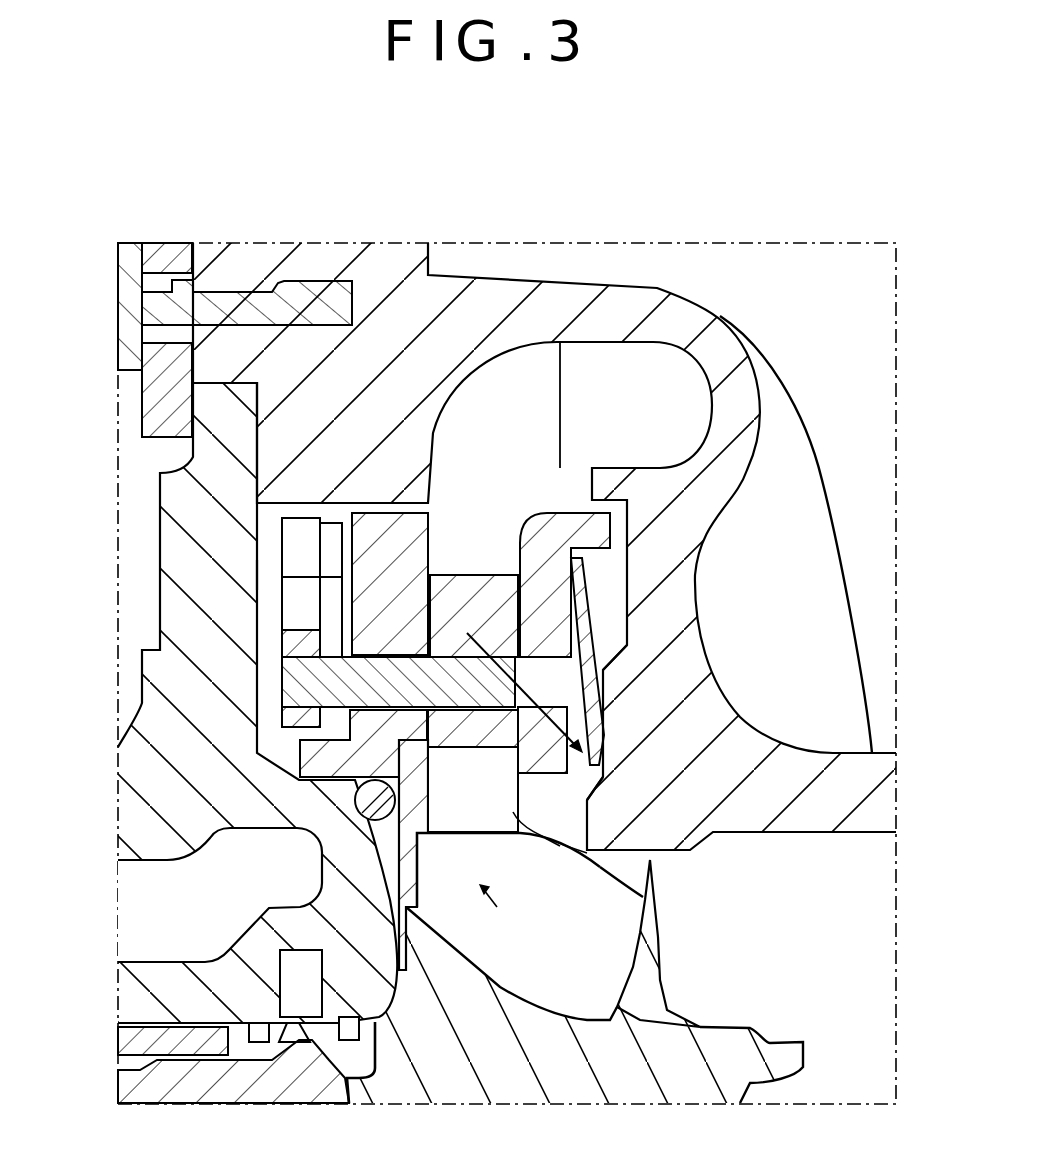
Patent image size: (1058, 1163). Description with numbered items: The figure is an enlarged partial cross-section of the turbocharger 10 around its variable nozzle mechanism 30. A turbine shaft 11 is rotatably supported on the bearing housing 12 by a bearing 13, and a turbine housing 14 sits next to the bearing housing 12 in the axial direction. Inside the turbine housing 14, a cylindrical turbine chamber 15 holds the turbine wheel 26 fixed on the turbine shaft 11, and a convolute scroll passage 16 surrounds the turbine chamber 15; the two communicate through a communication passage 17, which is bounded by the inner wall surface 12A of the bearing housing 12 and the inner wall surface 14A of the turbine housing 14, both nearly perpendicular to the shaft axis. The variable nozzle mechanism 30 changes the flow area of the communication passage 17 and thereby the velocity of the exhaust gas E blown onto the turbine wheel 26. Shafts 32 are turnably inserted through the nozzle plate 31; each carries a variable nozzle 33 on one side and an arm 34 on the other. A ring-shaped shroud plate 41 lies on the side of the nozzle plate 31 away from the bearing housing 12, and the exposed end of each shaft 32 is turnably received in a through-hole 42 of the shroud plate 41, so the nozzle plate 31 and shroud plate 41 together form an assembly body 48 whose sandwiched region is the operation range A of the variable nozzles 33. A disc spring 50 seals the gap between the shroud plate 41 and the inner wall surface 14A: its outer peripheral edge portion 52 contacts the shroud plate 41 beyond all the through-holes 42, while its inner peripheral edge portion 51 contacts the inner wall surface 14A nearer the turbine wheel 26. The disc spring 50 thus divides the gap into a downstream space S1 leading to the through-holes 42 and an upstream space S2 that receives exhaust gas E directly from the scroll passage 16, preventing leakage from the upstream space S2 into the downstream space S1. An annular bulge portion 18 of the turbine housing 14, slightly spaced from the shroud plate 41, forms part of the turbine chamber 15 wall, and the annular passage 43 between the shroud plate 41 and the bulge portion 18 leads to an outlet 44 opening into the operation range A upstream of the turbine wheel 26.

The turbocharger 10 is at (295, 230).
The turbine shaft 11 is at (372, 1048).
The bearing housing 12 is at (170, 548).
The inner wall surface 12A is at (256, 578).
The bearing 13 is at (134, 1042).
The turbine housing 14 is at (780, 404).
The inner wall surface 14A is at (668, 604).
The turbine chamber 15 is at (561, 986).
The scroll passage 16 is at (588, 421).
The communication passage 17 is at (440, 564).
The bulge portion 18 is at (594, 862).
The turbine wheel 26 is at (650, 950).
The variable nozzle mechanism 30 is at (522, 964).
The nozzle plate 31 is at (386, 512).
The shaft 32 is at (370, 660).
The variable nozzle 33 is at (452, 836).
The arm 34 is at (282, 656).
The shroud plate 41 is at (548, 518).
The through-hole 42 is at (528, 656).
The passage 43 is at (553, 848).
The outlet 44 is at (518, 840).
The assembly body 48 is at (502, 911).
The disc spring 50 is at (598, 706).
The inner peripheral edge portion 51 is at (604, 768).
The outer peripheral edge portion 52 is at (598, 575).
The operation range A is at (507, 777).
The exhaust gas E is at (491, 540).
The downstream space S1 is at (582, 775).
The upstream space S2 is at (672, 648).